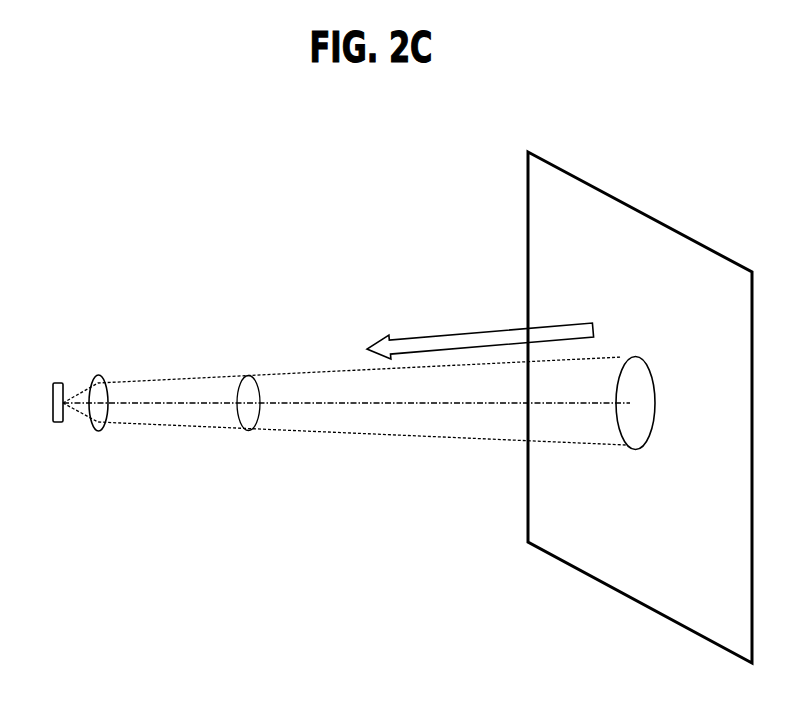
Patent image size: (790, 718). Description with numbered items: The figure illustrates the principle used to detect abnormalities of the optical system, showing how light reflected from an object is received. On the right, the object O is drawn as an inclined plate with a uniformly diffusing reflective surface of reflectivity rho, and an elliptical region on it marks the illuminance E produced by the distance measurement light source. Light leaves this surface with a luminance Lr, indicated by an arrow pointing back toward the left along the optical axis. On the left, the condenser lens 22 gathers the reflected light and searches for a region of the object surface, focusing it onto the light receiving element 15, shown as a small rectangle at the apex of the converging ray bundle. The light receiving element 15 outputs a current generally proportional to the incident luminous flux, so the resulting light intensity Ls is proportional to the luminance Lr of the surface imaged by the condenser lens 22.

The light receiving element 15 is at (57, 383).
The condenser lens 22 is at (98, 377).
The object O is at (640, 407).
The illuminance E is at (635, 433).
The luminance Lr is at (480, 326).
The light intensity Ls is at (331, 426).